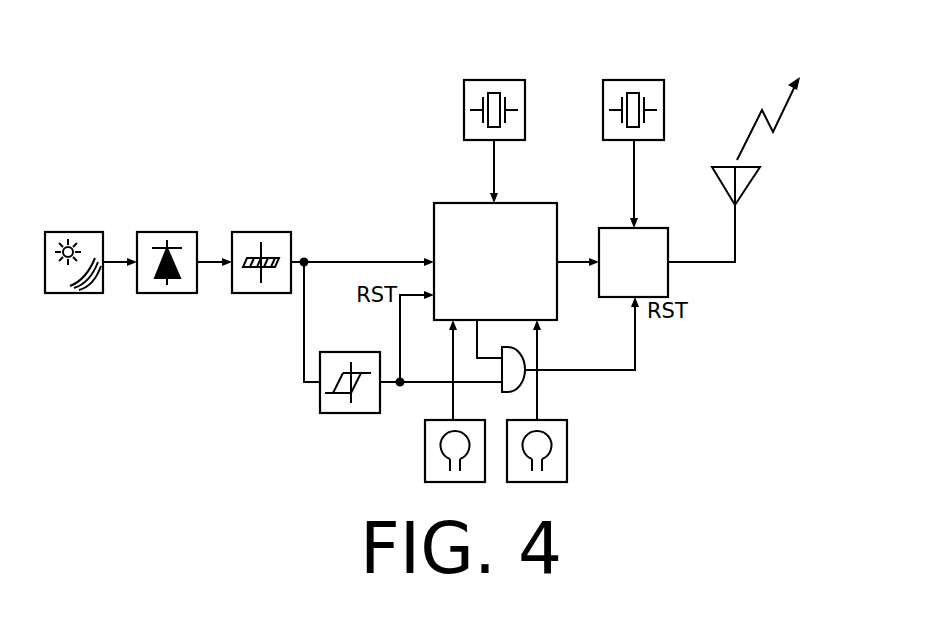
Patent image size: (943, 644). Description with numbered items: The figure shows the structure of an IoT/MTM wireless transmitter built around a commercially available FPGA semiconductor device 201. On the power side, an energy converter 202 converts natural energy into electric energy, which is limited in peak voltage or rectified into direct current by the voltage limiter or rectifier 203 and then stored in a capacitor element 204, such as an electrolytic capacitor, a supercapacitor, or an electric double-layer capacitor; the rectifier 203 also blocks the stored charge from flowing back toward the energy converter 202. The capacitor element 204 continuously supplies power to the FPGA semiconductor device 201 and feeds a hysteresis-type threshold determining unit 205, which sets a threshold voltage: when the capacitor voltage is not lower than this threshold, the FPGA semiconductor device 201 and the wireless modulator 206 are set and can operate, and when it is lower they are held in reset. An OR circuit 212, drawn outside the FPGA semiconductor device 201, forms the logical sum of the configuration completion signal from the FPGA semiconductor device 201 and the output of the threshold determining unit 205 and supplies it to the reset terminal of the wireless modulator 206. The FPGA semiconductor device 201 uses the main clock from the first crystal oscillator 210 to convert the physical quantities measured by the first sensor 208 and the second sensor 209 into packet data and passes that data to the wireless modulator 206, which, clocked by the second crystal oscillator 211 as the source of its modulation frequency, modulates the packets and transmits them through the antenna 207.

The FPGA semiconductor device 201 is at (548, 203).
The energy converter 202 is at (83, 232).
The voltage limiter or rectifier 203 is at (173, 232).
The capacitor element 204 is at (268, 232).
The hysteresis-type threshold determining unit 205 is at (320, 404).
The wireless modulator 206 is at (655, 228).
The antenna 207 is at (722, 167).
The first sensor 208 is at (425, 463).
The second sensor 209 is at (567, 462).
The first crystal oscillator 210 is at (501, 80).
The second crystal oscillator 211 is at (643, 80).
The OR circuit 212 is at (528, 378).